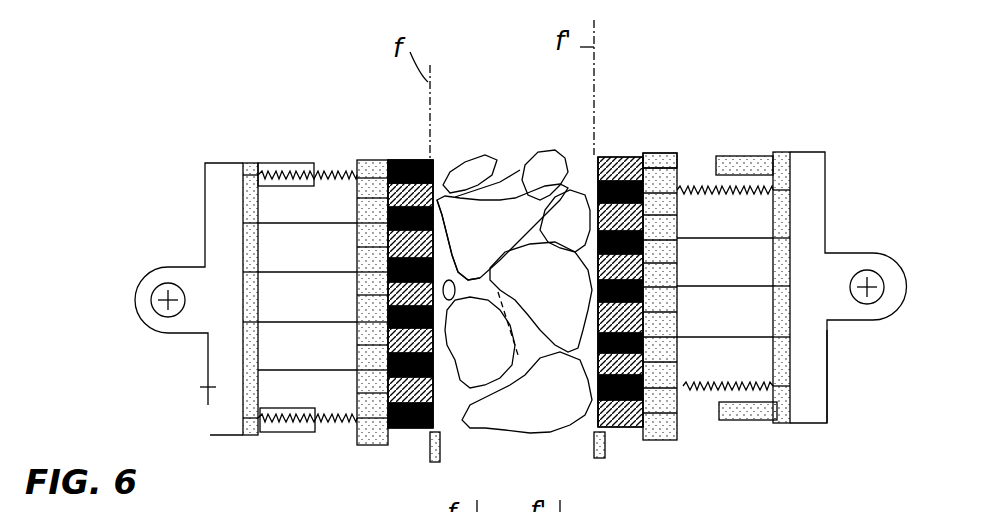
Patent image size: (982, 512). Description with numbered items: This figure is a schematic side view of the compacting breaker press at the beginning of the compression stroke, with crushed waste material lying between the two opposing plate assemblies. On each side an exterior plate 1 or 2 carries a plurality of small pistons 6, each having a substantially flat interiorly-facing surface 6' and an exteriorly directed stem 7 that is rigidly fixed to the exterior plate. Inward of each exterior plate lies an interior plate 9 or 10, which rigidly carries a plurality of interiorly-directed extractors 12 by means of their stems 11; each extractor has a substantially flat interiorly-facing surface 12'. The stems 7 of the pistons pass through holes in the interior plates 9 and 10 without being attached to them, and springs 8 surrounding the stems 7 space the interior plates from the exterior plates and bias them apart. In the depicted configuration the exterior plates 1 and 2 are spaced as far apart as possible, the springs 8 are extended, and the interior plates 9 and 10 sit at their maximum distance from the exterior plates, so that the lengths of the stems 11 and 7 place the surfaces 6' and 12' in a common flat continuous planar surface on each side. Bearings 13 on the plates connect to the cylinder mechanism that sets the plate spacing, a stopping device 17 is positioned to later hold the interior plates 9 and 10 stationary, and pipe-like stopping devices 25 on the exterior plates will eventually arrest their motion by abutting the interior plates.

The exterior plate 1 is at (196, 392).
The exterior plate 2 is at (812, 393).
The piston 6 is at (410, 157).
The interiorly-facing surface of the piston 6' is at (514, 266).
The stem 7 is at (322, 187).
The spring 8 is at (347, 168).
The interior plate 9 is at (377, 157).
The interior plate 10 is at (657, 150).
The stem 11 is at (677, 155).
The extractor 12 is at (540, 269).
The interiorly-facing surface of the extractor 12' is at (516, 204).
The bearing 13 is at (513, 293).
The stopping device 17 is at (432, 452).
The pipe-like stopping device 25 is at (290, 165).